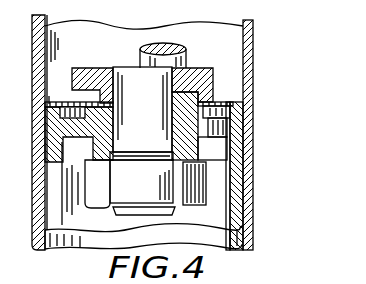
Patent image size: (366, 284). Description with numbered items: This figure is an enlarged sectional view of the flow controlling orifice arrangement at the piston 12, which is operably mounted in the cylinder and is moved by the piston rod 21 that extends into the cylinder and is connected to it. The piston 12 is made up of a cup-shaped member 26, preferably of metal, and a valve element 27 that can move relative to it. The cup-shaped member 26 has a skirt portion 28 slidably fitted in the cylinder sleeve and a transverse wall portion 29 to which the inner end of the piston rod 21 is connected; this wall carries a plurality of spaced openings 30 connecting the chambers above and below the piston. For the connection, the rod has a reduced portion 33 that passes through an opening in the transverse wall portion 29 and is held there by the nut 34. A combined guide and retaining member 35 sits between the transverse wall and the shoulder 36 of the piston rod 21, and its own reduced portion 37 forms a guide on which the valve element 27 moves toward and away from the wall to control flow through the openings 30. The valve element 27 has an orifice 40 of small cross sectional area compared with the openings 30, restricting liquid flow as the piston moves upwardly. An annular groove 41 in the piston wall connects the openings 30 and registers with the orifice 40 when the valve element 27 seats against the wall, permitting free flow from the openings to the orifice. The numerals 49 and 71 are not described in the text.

The piston 12 is at (44, 252).
The piston rod 21 is at (188, 58).
The cup-shaped member 26 is at (243, 175).
The valve element 27 is at (226, 98).
The skirt portion 28 is at (213, 204).
The transverse wall portion 29 is at (67, 162).
The spaced openings 30 is at (222, 158).
The reduced portion 33 is at (122, 79).
The nut 34 is at (92, 197).
The combined guide and retaining member 35 is at (223, 72).
The shoulder 36 is at (122, 78).
The reduced portion 37 is at (122, 100).
The orifice 40 is at (72, 102).
The annular groove 41 is at (231, 117).
The outer wall 49 is at (32, 132).
The inner wall 71 is at (39, 183).